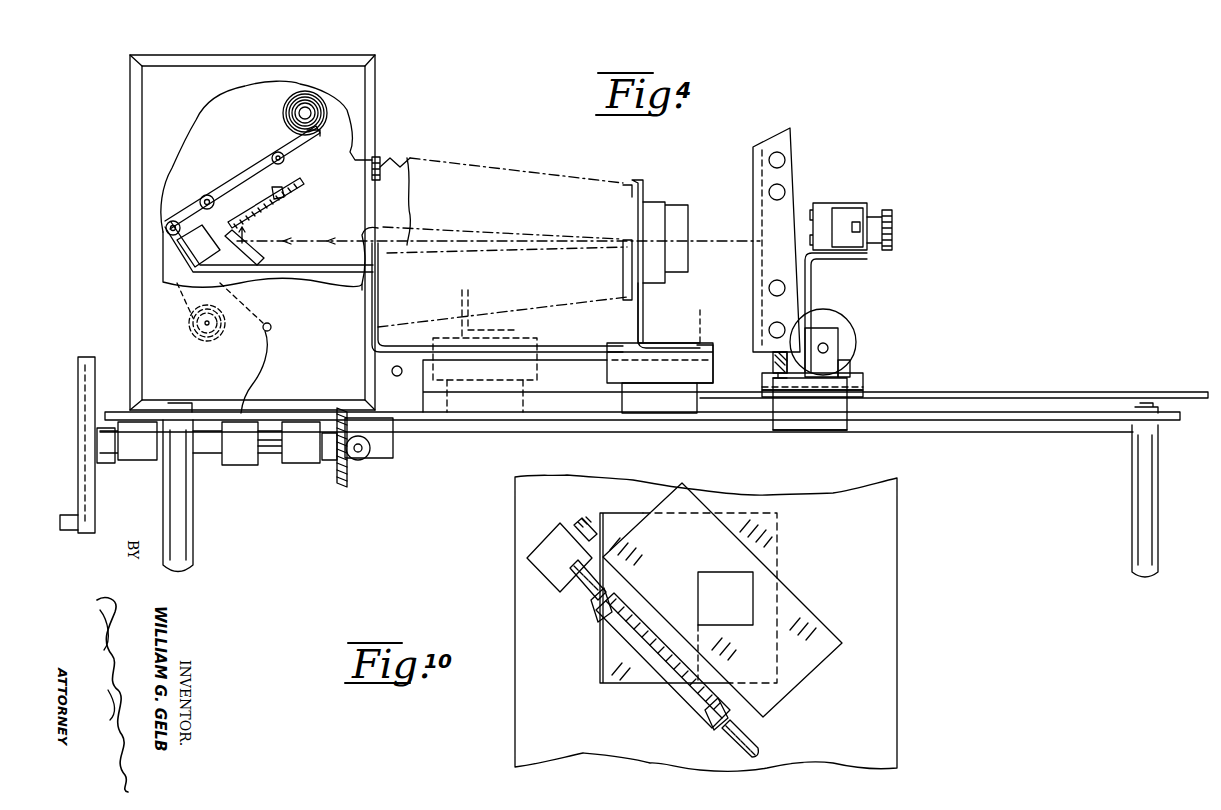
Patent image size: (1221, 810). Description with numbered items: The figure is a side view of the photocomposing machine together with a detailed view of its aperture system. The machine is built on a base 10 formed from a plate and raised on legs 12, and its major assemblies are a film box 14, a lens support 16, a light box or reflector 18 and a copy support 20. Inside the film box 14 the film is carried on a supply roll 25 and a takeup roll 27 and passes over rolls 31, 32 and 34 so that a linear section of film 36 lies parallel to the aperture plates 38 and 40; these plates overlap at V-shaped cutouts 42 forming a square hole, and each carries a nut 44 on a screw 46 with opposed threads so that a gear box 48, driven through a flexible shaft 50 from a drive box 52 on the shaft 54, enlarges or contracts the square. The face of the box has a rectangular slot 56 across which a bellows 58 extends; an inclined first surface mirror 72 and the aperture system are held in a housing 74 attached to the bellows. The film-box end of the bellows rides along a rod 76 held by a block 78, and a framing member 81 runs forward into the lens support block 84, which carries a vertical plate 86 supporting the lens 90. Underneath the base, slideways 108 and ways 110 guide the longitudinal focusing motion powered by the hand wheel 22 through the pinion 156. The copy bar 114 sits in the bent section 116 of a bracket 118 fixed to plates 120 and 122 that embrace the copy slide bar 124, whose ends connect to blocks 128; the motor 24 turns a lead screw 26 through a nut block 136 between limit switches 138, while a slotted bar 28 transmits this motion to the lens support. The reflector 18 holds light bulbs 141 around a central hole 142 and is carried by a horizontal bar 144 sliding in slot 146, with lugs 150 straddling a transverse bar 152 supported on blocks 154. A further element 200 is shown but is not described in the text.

In FIG. 4, the base 10 is at (1175, 420).
In FIG. 4, the legs 12 is at (183, 530).
In FIG. 4, the film box 14 is at (380, 65).
In FIG. 4, the lens support 16 is at (653, 176).
In FIG. 4, the light box (reflector) 18 is at (752, 142).
In FIG. 4, the copy support 20 is at (872, 202).
In FIG. 4, the hand wheel 22 is at (85, 528).
In FIG. 4, the electric motor 24 is at (845, 318).
In FIG. 4, the roll 25 is at (196, 343).
In FIG. 4, the screw (lead screw) 26 is at (830, 347).
In FIG. 4, the roll 27 is at (310, 105).
In FIG. 4, the slotted bar 28 is at (488, 378).
In FIG. 4, the roll 31 is at (278, 152).
In FIG. 4, the roll 32 is at (206, 195).
In FIG. 4, the roll 34 is at (165, 232).
In FIG. 4, the section of film 36 is at (248, 192).
In FIG. 4, the aperture plate 38 is at (258, 203).
In FIG. 10, the aperture plate 38 is at (736, 548).
In FIG. 4, the aperture plate 40 is at (308, 156).
In FIG. 10, the aperture plate 40 is at (785, 600).
In FIG. 10, the V-shaped cutouts 42 is at (716, 585).
In FIG. 4, the nut 44 is at (282, 200).
In FIG. 10, the nut 44 is at (592, 618).
In FIG. 4, the screw 46 is at (283, 196).
In FIG. 10, the screw 46 is at (690, 700).
In FIG. 10, the gear box 48 is at (540, 565).
In FIG. 4, the flexible shaft 50 is at (266, 372).
In FIG. 10, the flexible shaft 50 is at (586, 515).
In FIG. 4, the drive box 52 is at (242, 468).
In FIG. 4, the shaft 54 is at (200, 462).
In FIG. 4, the rectangular slot 56 is at (372, 287).
In FIG. 4, the bellows 58 is at (512, 160).
In FIG. 4, the first surface mirror 72 is at (258, 258).
In FIG. 10, the first surface mirror 72 is at (772, 524).
In FIG. 4, the housing 74 is at (300, 283).
In FIG. 10, the housing 74 is at (530, 697).
In FIG. 4, the rod 76 is at (397, 376).
In FIG. 4, the block 78 is at (412, 407).
In FIG. 4, the bellows framing member 81 is at (386, 307).
In FIG. 4, the lens support block 84 is at (655, 345).
In FIG. 4, the vertical plate 86 is at (645, 310).
In FIG. 4, the lens 90 is at (662, 200).
In FIG. 4, the slideways 108 is at (280, 468).
In FIG. 4, the ways 110 is at (592, 428).
In FIG. 4, the copy bar 114 is at (863, 205).
In FIG. 4, the right-angle bent section 116 is at (870, 256).
In FIG. 4, the support bracket 118 is at (808, 292).
In FIG. 4, the plate 120 is at (863, 383).
In FIG. 4, the plate 122 is at (866, 396).
In FIG. 4, the copy slide bar 124 is at (812, 395).
In FIG. 4, the blocks 128 is at (828, 432).
In FIG. 4, the nut block 136 is at (842, 352).
In FIG. 4, the limit switches 138 is at (852, 368).
In FIG. 4, the light bulbs 141 is at (785, 158).
In FIG. 4, the central circular hole 142 is at (758, 210).
In FIG. 4, the horizontal bar 144 is at (730, 352).
In FIG. 4, the slot 146 is at (704, 332).
In FIG. 4, the lugs 150 is at (770, 372).
In FIG. 4, the transverse bar 152 is at (345, 480).
In FIG. 4, the blocks (journal blocks) 154 is at (108, 466).
In FIG. 4, the pinion 156 is at (366, 458).
In FIG. 4, the detector housing 200 is at (822, 203).